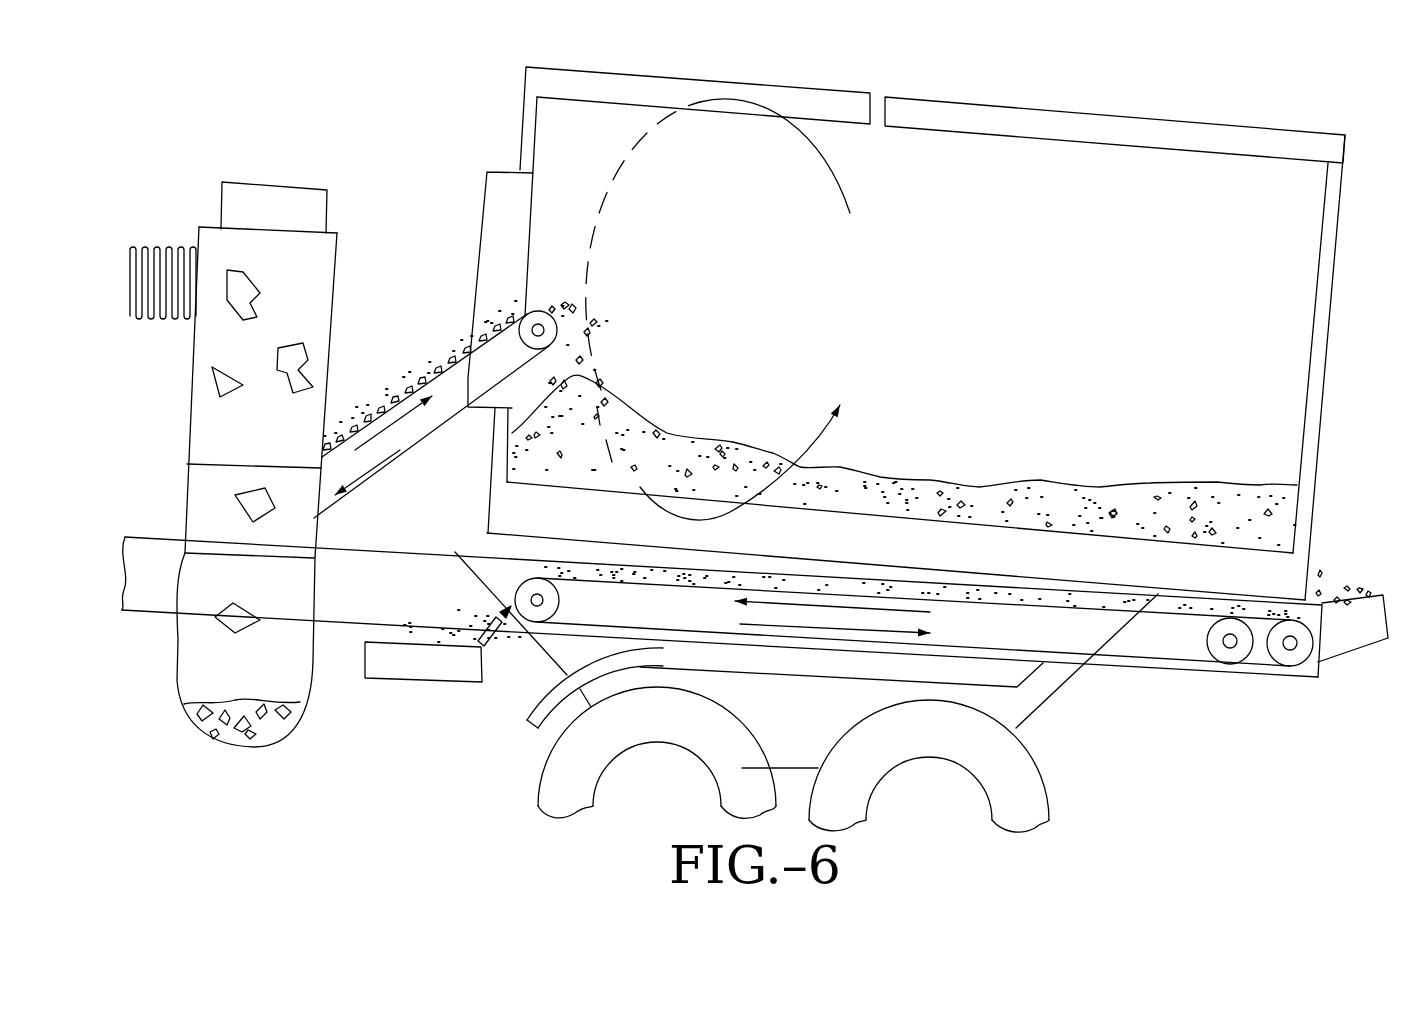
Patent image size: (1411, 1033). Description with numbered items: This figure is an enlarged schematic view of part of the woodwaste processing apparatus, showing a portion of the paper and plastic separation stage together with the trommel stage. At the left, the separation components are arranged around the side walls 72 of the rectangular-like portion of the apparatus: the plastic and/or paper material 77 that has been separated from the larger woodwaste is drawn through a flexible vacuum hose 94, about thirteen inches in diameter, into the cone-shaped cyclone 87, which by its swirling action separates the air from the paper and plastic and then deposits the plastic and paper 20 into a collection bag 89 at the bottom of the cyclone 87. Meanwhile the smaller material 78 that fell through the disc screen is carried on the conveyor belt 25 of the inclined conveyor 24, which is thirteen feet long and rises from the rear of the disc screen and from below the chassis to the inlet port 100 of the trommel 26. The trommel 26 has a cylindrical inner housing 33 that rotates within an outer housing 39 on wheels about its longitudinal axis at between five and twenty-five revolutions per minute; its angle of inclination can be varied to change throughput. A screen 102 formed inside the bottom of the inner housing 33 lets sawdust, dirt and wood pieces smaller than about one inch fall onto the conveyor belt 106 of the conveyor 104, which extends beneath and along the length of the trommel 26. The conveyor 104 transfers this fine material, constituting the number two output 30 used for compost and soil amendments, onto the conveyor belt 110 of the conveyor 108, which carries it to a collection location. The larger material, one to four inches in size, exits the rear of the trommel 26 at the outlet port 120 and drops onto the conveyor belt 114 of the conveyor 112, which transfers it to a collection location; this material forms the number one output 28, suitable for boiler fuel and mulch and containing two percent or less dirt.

The plastic and paper 20 is at (196, 197).
The flexible vacuum hose 94 is at (168, 246).
The cyclone 87 is at (324, 248).
The side walls 72 is at (203, 421).
The plastic and/or paper material 77 is at (205, 768).
The collection bag 89 is at (285, 682).
The inlet port 100 is at (465, 335).
The conveyor 24 is at (369, 380).
The conveyor belt 25 is at (373, 478).
The smaller material 78 is at (405, 368).
The trommel 26 is at (1083, 97).
The outer housing 39 is at (907, 98).
The cylindrical inner housing 33 is at (1212, 152).
The screen 102 is at (883, 485).
The outlet port 120 is at (1314, 548).
The conveyor belt 114 is at (1380, 613).
The conveyor 112 is at (1364, 660).
The conveyor 104 is at (1182, 665).
The conveyor belt 106 is at (1070, 602).
The number one output 28 is at (1330, 702).
The number two output 30 is at (418, 713).
The conveyor 108 is at (487, 668).
The conveyor belt 110 is at (394, 643).